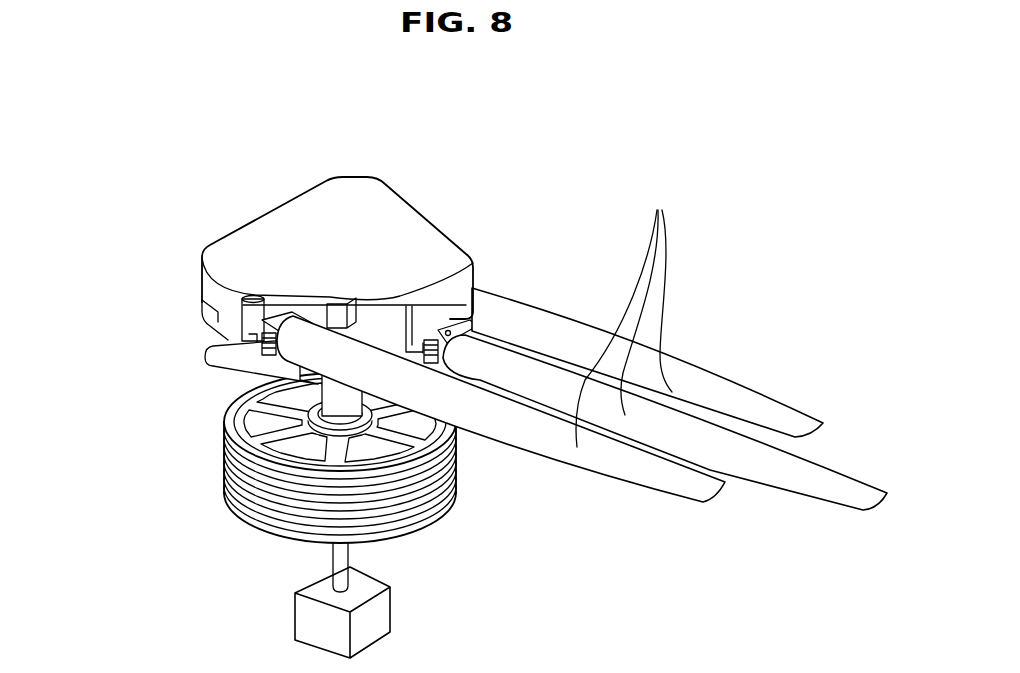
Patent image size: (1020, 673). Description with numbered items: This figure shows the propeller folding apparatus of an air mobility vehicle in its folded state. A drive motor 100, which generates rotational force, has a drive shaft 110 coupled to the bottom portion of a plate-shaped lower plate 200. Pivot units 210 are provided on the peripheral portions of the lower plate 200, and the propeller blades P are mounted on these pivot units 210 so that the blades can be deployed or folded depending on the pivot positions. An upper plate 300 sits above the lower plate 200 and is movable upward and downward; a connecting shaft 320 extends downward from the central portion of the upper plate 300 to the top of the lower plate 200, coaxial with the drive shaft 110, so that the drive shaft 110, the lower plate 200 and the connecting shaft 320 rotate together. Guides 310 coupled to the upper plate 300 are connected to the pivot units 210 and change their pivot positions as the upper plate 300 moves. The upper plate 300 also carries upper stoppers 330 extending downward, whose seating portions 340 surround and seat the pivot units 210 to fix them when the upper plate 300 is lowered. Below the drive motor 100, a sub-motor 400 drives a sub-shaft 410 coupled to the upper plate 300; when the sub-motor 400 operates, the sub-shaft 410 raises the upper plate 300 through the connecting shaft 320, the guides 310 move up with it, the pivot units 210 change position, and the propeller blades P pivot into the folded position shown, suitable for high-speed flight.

The drive motor 100 is at (224, 483).
The drive shaft 110 is at (226, 417).
The lower plate 200 is at (383, 318).
The pivot unit 210 is at (237, 330).
The upper plate 300 is at (343, 197).
The guide 310 is at (255, 299).
The connecting shaft 320 is at (348, 316).
The upper stopper 330 is at (212, 290).
The seating portion 340 is at (212, 306).
The sub-motor 400 is at (378, 617).
The sub-shaft 410 is at (338, 560).
The propeller blade P is at (624, 316).